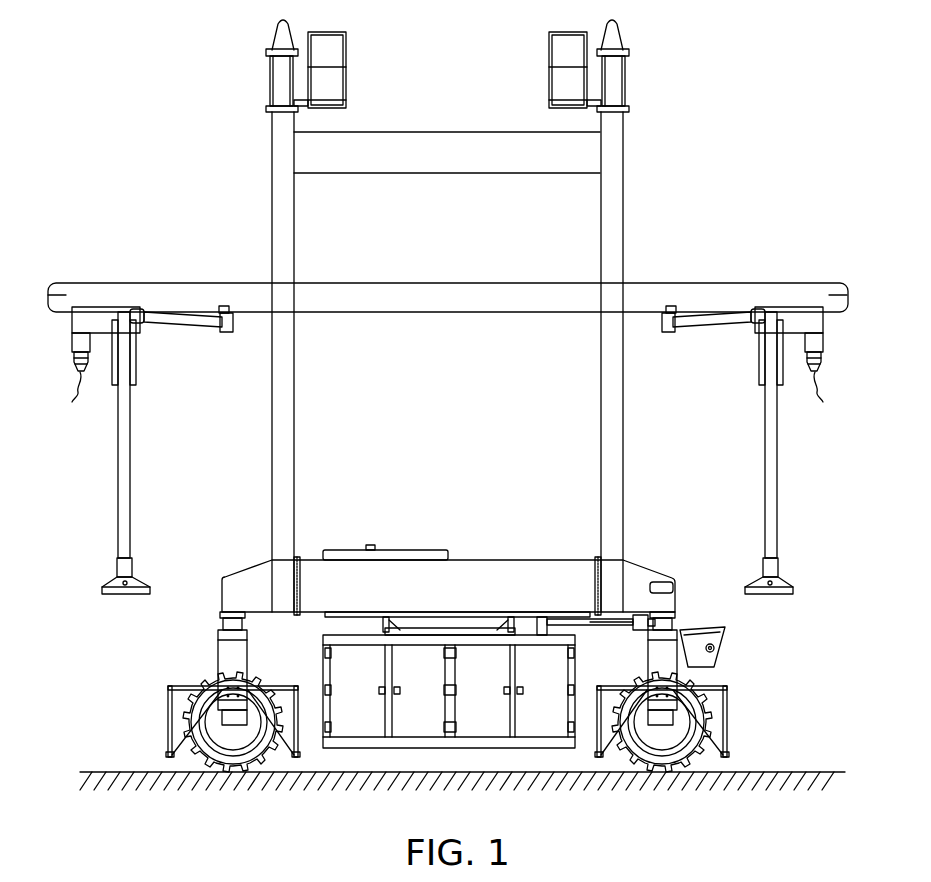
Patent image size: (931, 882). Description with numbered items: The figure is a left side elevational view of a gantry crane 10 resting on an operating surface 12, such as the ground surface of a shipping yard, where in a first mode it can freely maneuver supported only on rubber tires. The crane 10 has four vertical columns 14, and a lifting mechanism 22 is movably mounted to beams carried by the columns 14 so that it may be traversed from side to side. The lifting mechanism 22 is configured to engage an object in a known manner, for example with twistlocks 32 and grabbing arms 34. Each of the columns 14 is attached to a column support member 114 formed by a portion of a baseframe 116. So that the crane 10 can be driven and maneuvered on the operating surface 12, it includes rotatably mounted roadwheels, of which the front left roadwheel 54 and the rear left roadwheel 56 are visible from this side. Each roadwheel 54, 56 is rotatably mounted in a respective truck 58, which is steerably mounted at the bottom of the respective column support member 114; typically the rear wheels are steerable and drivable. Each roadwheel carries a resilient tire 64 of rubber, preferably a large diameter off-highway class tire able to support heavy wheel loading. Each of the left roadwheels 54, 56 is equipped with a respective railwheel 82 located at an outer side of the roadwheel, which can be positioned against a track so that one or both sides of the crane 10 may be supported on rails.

The gantry crane 10 is at (737, 149).
The operating surface 12 is at (797, 772).
The vertical columns 14 is at (281, 210).
The lifting mechanism 22 is at (740, 285).
The twistlocks 32 is at (78, 374).
The grabbing arms 34 is at (122, 505).
The front left roadwheel 54 is at (201, 683).
The rear left roadwheel 56 is at (711, 709).
The truck 58 is at (240, 655).
The tire 64 is at (187, 700).
The railwheel 82 is at (200, 735).
The column support member 114 is at (240, 582).
The baseframe 116 is at (480, 575).